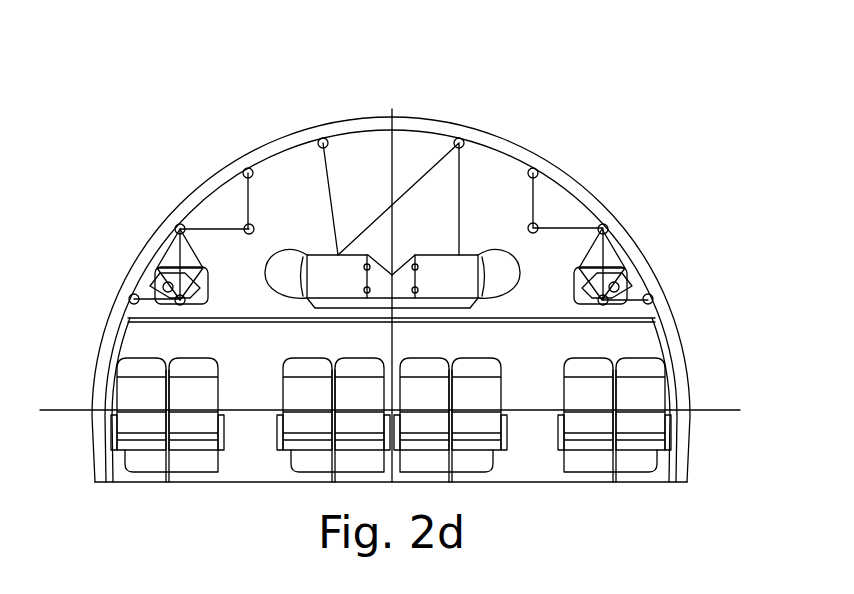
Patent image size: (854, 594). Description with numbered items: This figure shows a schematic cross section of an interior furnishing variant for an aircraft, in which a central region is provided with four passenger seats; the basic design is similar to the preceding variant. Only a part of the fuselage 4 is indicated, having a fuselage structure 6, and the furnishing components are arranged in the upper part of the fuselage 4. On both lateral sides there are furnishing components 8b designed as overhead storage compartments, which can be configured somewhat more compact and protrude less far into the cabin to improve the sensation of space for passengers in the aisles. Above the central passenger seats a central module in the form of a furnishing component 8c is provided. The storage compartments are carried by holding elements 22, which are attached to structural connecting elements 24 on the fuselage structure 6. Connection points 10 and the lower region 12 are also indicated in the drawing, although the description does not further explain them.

The fuselage 4 is at (598, 196).
The fuselage structure 6 is at (503, 137).
The furnishing component 8b is at (626, 275).
The furnishing component 8c is at (427, 270).
The connection fitting 10 is at (653, 299).
The lower fuselage cargo area 12 is at (522, 474).
The holding element 22 is at (534, 202).
The structural connecting element 24 is at (180, 228).